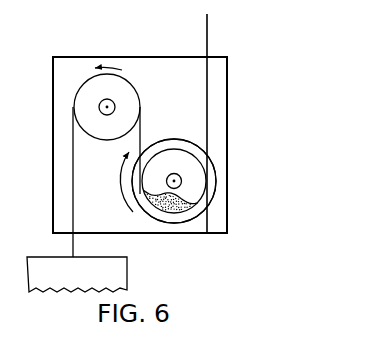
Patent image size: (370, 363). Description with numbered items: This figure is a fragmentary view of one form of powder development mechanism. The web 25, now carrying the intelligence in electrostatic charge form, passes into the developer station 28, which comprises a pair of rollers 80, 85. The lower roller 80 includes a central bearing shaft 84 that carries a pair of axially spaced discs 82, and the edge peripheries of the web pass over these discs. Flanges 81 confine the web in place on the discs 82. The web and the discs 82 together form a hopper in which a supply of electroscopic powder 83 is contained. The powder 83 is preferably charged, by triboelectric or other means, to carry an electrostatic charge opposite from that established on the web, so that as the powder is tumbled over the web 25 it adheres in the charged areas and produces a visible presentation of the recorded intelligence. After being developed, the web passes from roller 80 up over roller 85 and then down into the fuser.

The web 25 is at (73, 248).
The developer station 28 is at (53, 163).
The roller 80 is at (125, 204).
The flanges 81 is at (213, 174).
The discs 82 is at (160, 158).
The electroscopic powder 83 is at (182, 212).
The central bearing shaft 84 is at (174, 173).
The roller 85 is at (135, 91).